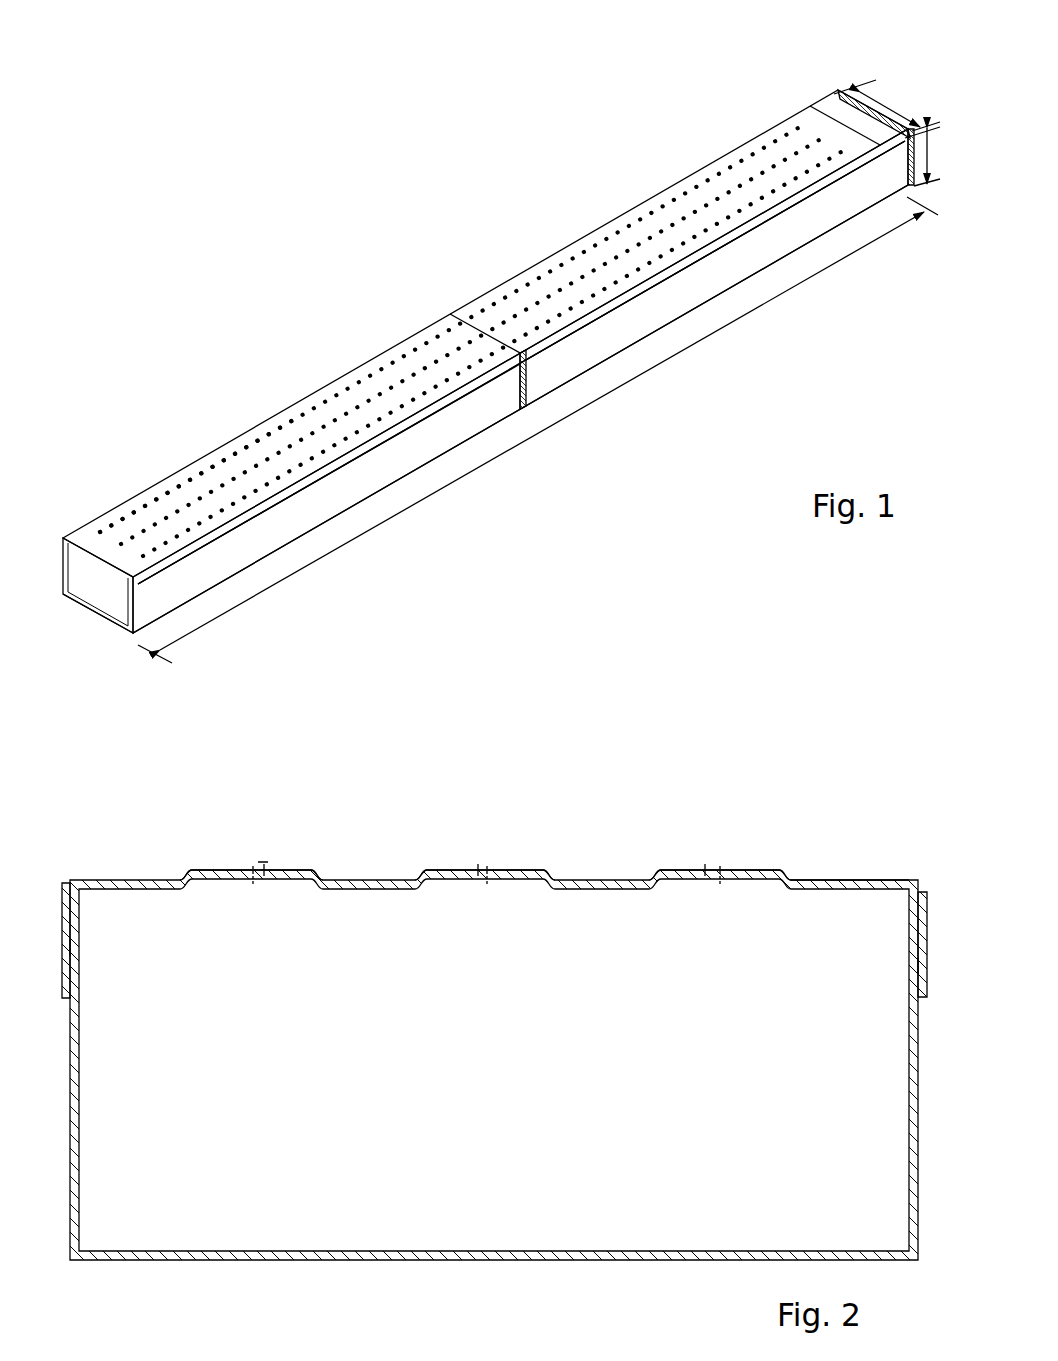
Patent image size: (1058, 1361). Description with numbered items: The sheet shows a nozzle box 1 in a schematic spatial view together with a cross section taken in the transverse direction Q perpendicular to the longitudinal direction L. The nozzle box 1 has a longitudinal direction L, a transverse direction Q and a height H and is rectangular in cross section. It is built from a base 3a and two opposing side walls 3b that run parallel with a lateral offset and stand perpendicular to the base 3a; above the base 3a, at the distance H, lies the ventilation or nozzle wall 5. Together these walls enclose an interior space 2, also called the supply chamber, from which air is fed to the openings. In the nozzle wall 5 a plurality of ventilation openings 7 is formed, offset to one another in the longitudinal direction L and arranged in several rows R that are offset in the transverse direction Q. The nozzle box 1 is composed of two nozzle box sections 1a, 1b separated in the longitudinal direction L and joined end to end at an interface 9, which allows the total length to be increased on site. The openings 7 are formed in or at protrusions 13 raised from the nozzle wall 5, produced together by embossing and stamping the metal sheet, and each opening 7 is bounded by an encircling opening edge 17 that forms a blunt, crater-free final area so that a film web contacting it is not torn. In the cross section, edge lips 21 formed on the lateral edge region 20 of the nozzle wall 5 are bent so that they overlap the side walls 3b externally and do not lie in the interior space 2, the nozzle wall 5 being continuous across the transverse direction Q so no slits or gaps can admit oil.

In FIG. 1, the nozzle box 1 is at (422, 307).
In FIG. 1, the nozzle box section 1a is at (308, 437).
In FIG. 1, the nozzle box section 1b is at (655, 237).
In FIG. 2, the interior space 2 is at (471, 1092).
In FIG. 1, the base 3a is at (93, 616).
In FIG. 1, the side walls 3b is at (313, 512).
In FIG. 1, the ventilation or nozzle wall 5 is at (222, 510).
In FIG. 2, the ventilation or nozzle wall 5 is at (810, 880).
In FIG. 1, the ventilation openings 7 is at (380, 398).
In FIG. 2, the ventilation openings 7 is at (268, 868).
In FIG. 1, the interface 9 is at (482, 325).
In FIG. 1, the protrusions 13 is at (688, 253).
In FIG. 2, the protrusions 13 is at (213, 860).
In FIG. 2, the opening edge 17 is at (530, 870).
In FIG. 2, the lateral edge region 20 is at (67, 880).
In FIG. 2, the edge lips 21 is at (70, 947).
In FIG. 1, the rows R is at (152, 555).
In FIG. 1, the transverse direction Q is at (885, 100).
In FIG. 1, the height H is at (915, 168).
In FIG. 1, the longitudinal direction L is at (592, 405).